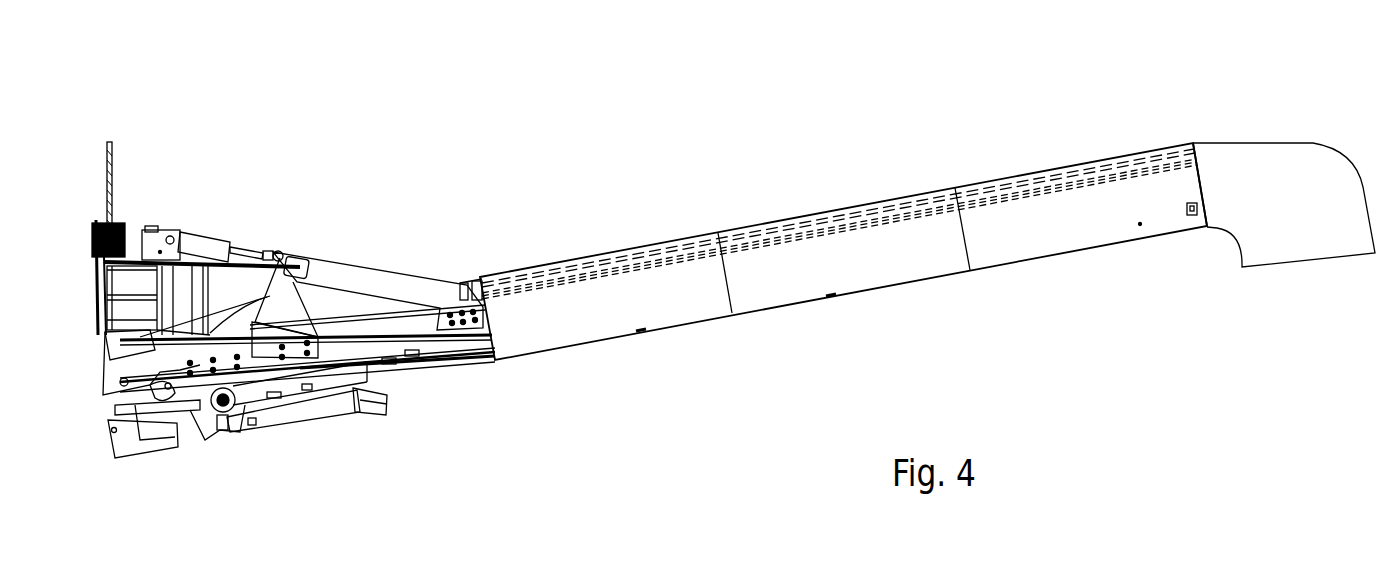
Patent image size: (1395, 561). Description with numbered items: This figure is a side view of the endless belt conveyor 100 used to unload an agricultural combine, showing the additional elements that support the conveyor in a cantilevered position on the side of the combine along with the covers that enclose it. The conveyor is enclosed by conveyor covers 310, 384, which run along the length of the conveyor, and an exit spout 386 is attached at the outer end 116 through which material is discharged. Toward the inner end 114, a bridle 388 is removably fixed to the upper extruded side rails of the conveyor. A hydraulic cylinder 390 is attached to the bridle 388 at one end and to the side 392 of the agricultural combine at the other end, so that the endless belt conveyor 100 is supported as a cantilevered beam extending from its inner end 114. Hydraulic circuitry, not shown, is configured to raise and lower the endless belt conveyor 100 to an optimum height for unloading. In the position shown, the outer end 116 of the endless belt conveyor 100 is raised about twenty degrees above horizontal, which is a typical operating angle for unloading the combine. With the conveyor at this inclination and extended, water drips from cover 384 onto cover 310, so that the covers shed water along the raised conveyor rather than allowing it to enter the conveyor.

The endless belt conveyor 100 is at (650, 400).
The inner end 114 is at (171, 195).
The outer end 116 is at (1193, 120).
The conveyor cover 310 is at (837, 215).
The conveyor cover 384 is at (915, 255).
The exit spout 386 is at (1262, 157).
The bridle 388 is at (355, 275).
The hydraulic cylinder 390 is at (217, 237).
The side of the agricultural combine 392 is at (108, 155).